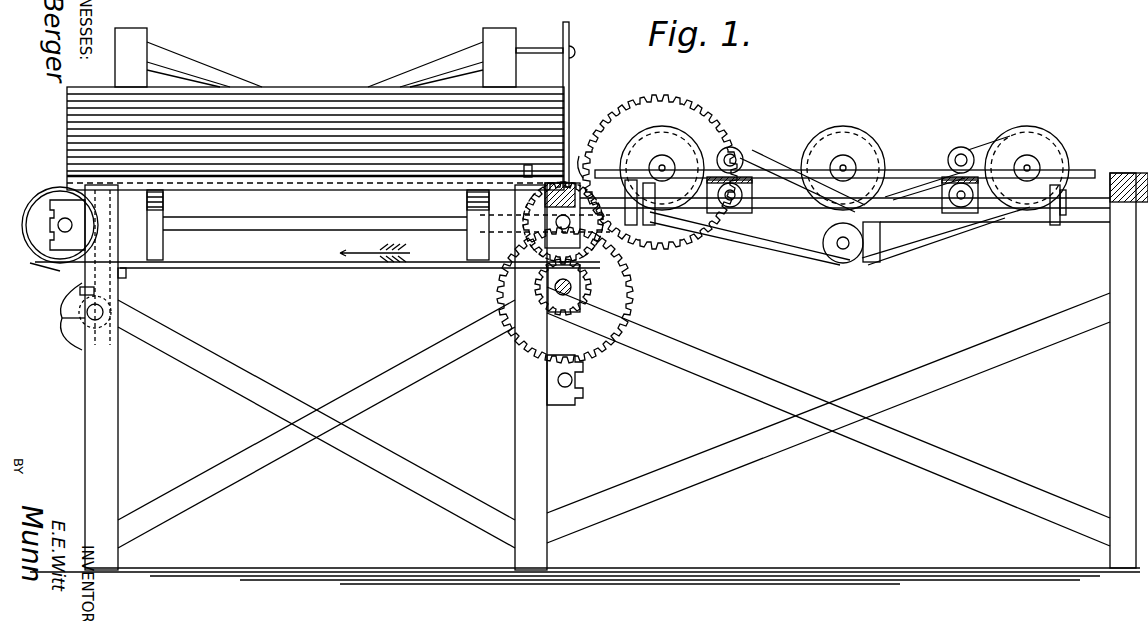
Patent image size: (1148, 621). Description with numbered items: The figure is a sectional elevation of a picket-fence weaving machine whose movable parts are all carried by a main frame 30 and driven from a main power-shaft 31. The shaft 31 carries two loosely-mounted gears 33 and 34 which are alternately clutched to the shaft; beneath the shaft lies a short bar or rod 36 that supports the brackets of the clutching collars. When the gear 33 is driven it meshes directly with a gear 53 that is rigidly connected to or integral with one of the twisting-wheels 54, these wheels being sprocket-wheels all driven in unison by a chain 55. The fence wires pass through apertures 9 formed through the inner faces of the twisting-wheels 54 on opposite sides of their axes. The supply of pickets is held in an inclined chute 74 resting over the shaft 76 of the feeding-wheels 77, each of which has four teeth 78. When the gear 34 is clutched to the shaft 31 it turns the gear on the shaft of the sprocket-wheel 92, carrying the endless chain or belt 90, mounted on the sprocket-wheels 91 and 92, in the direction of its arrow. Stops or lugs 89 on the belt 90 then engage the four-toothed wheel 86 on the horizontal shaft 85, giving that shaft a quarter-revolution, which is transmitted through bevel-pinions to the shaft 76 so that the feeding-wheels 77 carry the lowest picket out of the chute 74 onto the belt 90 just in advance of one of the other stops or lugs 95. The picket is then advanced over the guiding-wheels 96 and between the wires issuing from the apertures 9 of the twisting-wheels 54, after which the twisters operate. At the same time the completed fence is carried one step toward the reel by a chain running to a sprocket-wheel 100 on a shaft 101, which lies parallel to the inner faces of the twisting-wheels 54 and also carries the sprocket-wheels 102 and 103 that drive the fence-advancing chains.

The apertures 9 is at (664, 166).
The main frame 30 is at (531, 377).
The main power-shaft 31 is at (558, 283).
The gear 33 is at (565, 295).
The gear 34 is at (567, 287).
The bar or rod 36 is at (572, 380).
The gear 53 is at (660, 172).
The twisting-wheels 54 is at (680, 145).
The chain 55 is at (845, 162).
The inclined chute 74 is at (499, 57).
The shaft 76 is at (279, 224).
The feeding-wheels 77 is at (163, 240).
The teeth 78 is at (163, 196).
The horizontal shaft 85 is at (103, 308).
The four-toothed wheel 86 is at (64, 348).
The stops or lugs 89 is at (128, 275).
The endless chain or belt 90 is at (317, 256).
The sprocket-wheel 91 is at (60, 225).
The sprocket-wheel 92 is at (586, 246).
The stops or lugs 95 is at (40, 266).
The guiding-wheels 96 is at (735, 152).
The sprocket-wheel 100 is at (641, 210).
The shaft 101 is at (903, 200).
The sprocket-wheel 102 is at (664, 212).
The sprocket-wheel 103 is at (1062, 214).